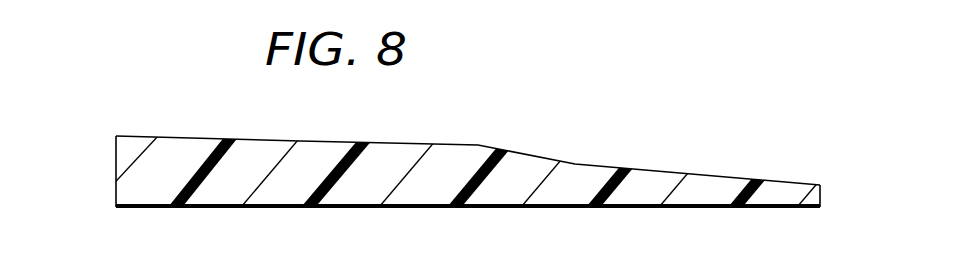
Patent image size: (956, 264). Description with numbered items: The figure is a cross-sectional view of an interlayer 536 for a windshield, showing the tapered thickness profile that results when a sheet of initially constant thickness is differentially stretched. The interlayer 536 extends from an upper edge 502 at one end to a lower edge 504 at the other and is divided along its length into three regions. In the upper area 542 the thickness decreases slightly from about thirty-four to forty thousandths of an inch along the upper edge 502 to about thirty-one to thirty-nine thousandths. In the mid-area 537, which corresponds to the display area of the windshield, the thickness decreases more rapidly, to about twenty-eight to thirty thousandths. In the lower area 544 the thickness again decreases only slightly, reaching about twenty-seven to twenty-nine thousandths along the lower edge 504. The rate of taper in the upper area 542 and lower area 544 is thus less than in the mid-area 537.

The upper edge 502 is at (115, 160).
The lower edge 504 is at (822, 191).
The interlayer 536 is at (267, 207).
The mid-area 537 is at (588, 161).
The upper area 542 is at (266, 136).
The lower area 544 is at (726, 170).